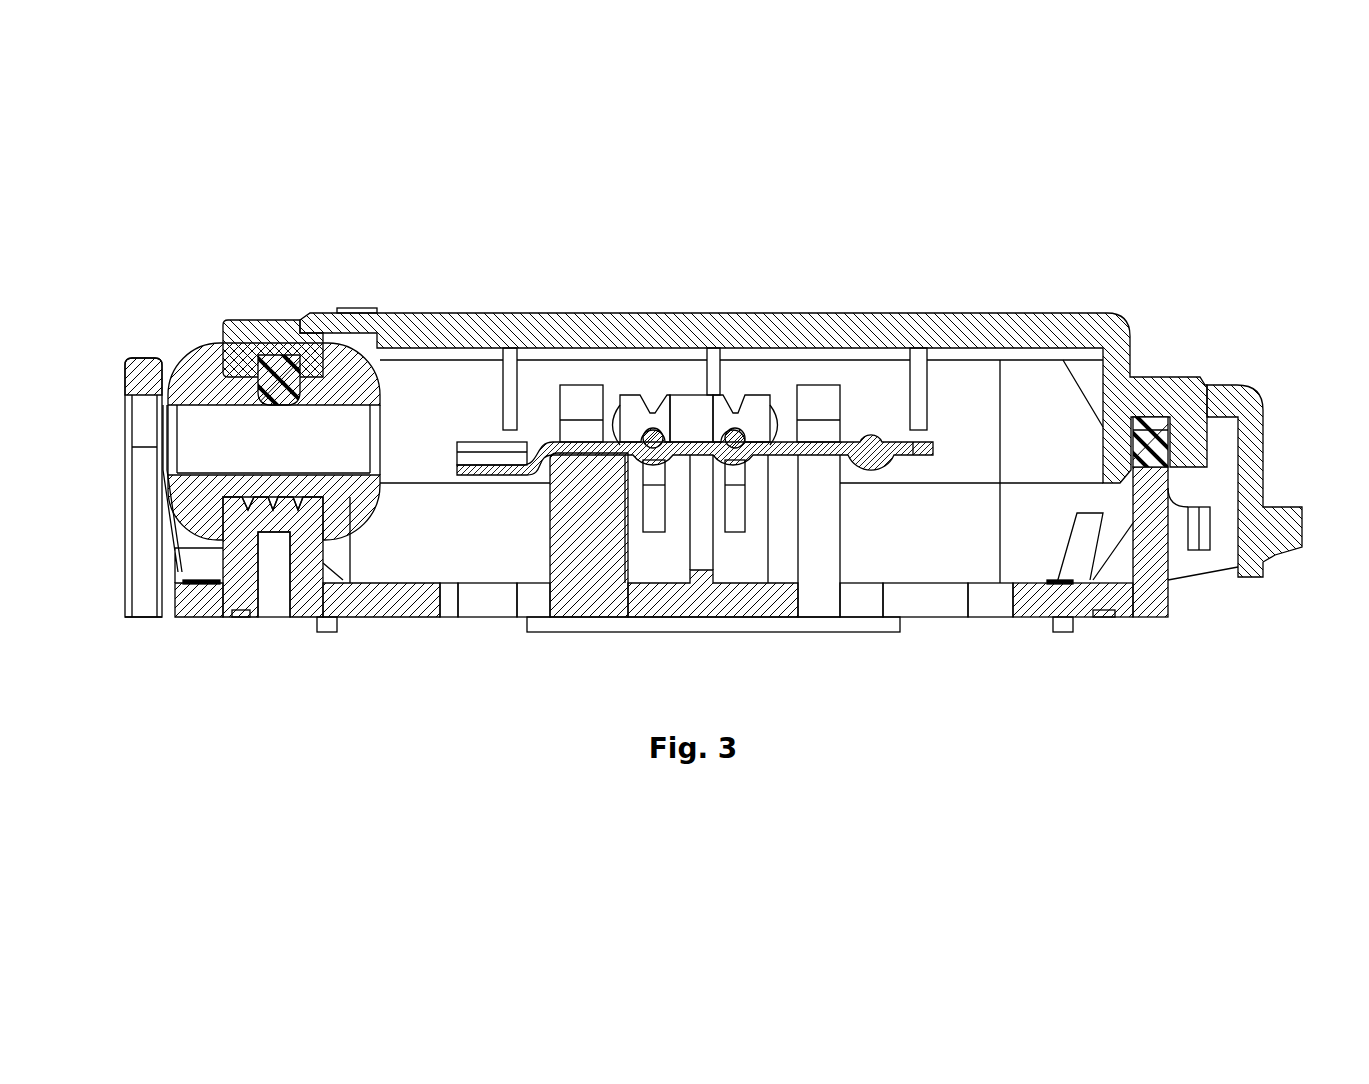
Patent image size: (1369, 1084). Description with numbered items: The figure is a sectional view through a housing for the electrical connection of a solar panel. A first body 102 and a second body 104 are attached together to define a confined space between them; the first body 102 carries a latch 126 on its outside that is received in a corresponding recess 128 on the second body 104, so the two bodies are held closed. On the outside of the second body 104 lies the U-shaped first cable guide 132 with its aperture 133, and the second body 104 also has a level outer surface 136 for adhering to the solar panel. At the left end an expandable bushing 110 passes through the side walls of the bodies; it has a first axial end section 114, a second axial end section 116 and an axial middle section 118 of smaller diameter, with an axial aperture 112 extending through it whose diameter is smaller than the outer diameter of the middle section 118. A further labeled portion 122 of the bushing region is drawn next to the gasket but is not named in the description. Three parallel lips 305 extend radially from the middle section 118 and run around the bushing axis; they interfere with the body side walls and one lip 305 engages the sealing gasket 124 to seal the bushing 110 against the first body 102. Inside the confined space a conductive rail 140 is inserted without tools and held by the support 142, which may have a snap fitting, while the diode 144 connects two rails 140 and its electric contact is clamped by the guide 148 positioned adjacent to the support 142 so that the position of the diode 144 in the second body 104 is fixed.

The first body 102 is at (1098, 320).
The second body 104 is at (1130, 601).
The bushing 110 is at (200, 358).
The axial aperture 112 is at (100, 461).
The first axial end section 114 is at (190, 511).
The second axial end section 116 is at (366, 511).
The axial middle section 118 is at (293, 507).
The ring portion 122 is at (318, 392).
The gasket 124 is at (277, 380).
The latch 126 is at (1253, 447).
The recess 128 is at (1203, 605).
The first cable guide 132 is at (138, 362).
The aperture 133 is at (136, 636).
The outer surface 136 is at (273, 665).
The rail 140 is at (550, 433).
The support 142 is at (580, 405).
The diode 144 is at (653, 413).
The guide 148 is at (695, 418).
The lip 305 is at (243, 505).